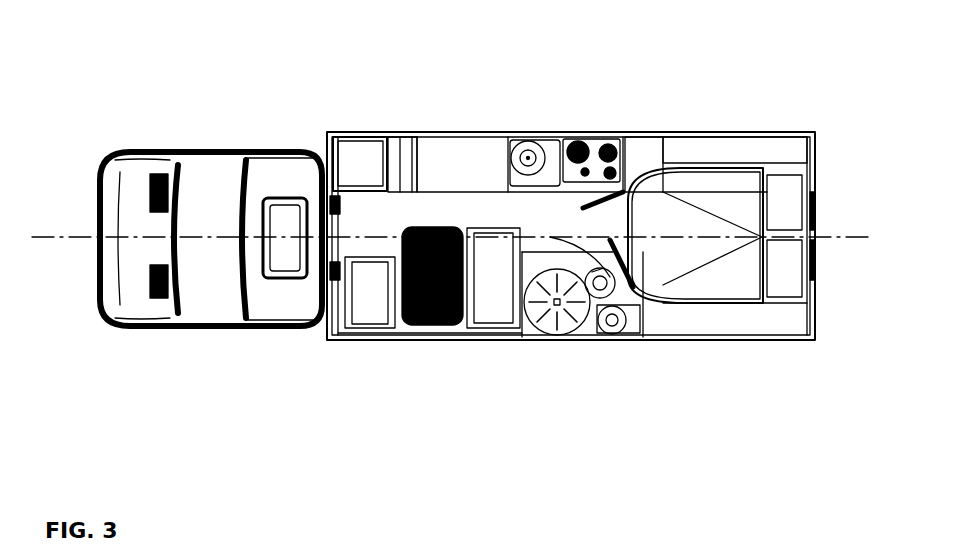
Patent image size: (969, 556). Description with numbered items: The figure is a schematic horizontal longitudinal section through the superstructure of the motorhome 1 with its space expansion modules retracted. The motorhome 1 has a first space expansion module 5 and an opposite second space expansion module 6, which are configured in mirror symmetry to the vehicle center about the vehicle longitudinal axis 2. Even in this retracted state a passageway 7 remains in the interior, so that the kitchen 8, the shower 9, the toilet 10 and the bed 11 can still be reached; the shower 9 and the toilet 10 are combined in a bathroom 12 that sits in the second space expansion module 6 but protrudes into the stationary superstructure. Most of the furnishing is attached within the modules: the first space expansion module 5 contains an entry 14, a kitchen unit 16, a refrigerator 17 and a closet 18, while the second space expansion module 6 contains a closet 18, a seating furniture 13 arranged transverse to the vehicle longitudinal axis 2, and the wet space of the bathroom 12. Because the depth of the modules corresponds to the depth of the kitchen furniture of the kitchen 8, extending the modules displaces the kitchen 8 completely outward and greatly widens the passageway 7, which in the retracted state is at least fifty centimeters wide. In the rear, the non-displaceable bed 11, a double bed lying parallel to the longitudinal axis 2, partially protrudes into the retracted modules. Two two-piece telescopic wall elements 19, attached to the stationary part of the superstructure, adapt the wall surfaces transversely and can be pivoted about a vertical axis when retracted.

The motorhome 1 is at (748, 99).
The vehicle longitudinal axis 2 is at (68, 237).
The first space expansion module 5 is at (498, 135).
The second space expansion module 6 is at (470, 330).
The passageway 7 is at (388, 222).
The kitchen 8 is at (562, 150).
The shower 9 is at (551, 325).
The toilet 10 is at (604, 300).
The bed 11 is at (738, 260).
The bathroom 12 is at (598, 333).
The seating furniture 13 is at (373, 320).
The entry 14 is at (455, 135).
The kitchen unit 16 is at (614, 138).
The refrigerator 17 is at (368, 163).
The closet 18 is at (718, 148).
The telescopic wall element 19 is at (627, 190).